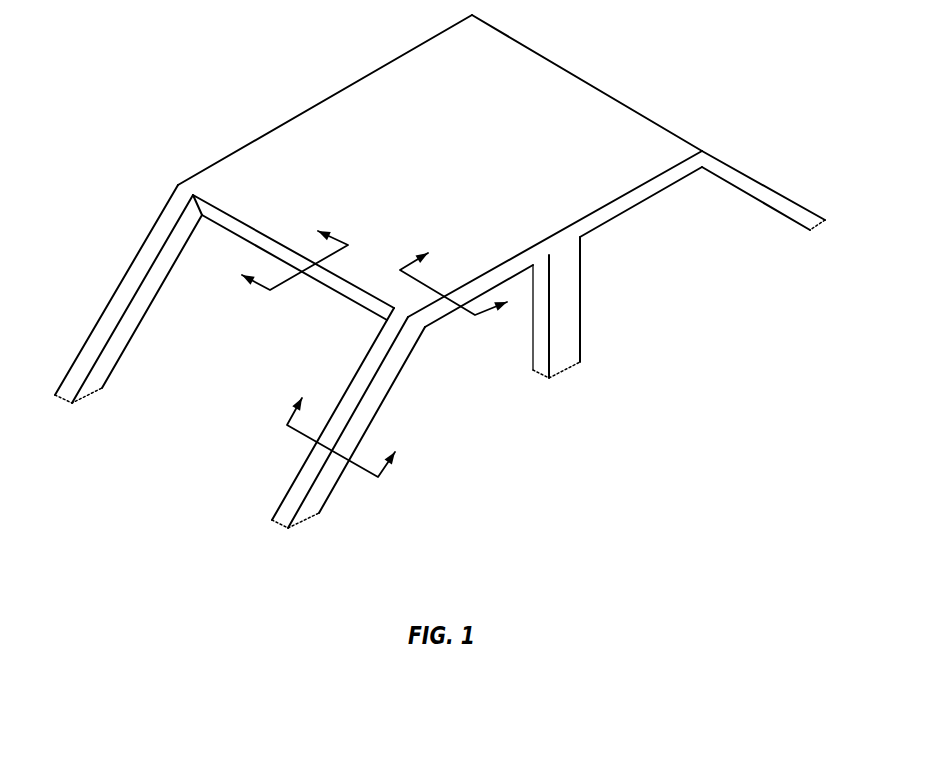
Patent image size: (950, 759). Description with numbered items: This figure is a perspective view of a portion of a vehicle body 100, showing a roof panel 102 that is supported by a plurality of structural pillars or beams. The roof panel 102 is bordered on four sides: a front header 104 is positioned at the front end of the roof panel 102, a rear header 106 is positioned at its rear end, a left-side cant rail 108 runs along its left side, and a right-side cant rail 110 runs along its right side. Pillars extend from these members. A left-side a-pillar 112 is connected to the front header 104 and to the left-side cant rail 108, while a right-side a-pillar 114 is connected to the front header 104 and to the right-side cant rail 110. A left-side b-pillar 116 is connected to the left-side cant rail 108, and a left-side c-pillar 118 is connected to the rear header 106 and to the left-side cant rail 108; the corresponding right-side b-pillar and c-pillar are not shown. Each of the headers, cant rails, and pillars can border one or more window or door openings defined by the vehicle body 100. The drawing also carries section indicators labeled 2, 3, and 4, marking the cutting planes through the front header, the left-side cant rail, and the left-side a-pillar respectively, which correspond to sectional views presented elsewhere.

The vehicle body 100 is at (162, 132).
The roof panel 102 is at (474, 156).
The front header 104 is at (358, 296).
The rear header 106 is at (598, 97).
The left-side cant rail 108 is at (620, 210).
The right-side cant rail 110 is at (315, 113).
The left-side a-pillar 112 is at (290, 495).
The right-side a-pillar 114 is at (83, 352).
The left-side b-pillar 116 is at (575, 328).
The left-side c-pillar 118 is at (788, 200).
The section line 2- 2 is at (286, 252).
The section line 3- 3 is at (461, 276).
The section line 4- 4 is at (346, 426).